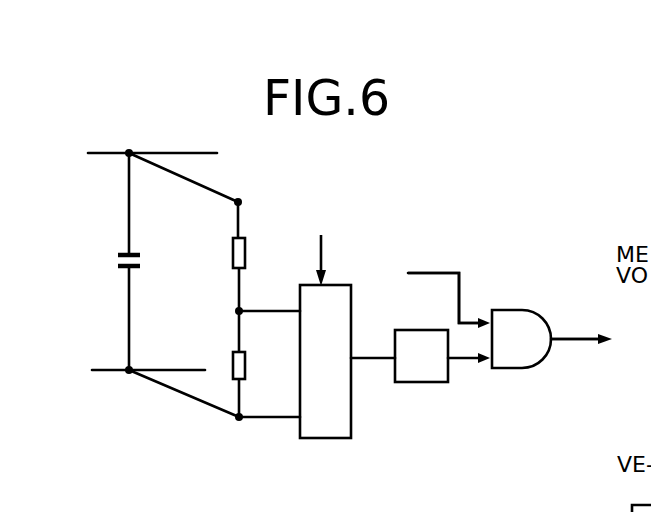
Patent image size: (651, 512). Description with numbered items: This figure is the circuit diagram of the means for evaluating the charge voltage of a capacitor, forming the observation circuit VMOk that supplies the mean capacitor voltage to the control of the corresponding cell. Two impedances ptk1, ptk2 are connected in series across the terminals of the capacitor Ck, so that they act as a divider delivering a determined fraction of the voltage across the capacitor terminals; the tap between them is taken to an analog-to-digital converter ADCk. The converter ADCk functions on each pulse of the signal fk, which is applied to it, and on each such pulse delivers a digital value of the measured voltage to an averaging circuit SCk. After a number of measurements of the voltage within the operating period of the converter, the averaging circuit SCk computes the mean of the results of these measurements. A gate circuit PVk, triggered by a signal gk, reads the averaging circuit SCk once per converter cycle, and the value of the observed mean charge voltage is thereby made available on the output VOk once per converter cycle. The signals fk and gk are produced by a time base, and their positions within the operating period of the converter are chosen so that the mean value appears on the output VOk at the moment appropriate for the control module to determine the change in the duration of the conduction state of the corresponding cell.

The capacitor Ck is at (142, 259).
The first impedance ptk1 is at (247, 255).
The second impedance ptk2 is at (238, 368).
The pulse signal fk is at (322, 258).
The analog-to-digital converter ADCk is at (326, 433).
The averaging circuit SCk is at (412, 374).
The observation circuit VMOk is at (419, 203).
The trigger signal gk is at (427, 272).
The gate circuit PVk is at (513, 308).
The output VOk is at (573, 335).